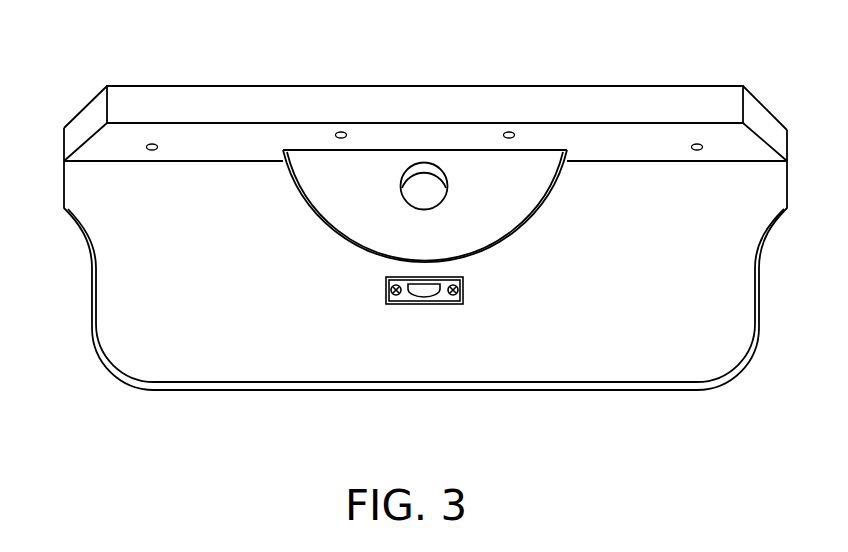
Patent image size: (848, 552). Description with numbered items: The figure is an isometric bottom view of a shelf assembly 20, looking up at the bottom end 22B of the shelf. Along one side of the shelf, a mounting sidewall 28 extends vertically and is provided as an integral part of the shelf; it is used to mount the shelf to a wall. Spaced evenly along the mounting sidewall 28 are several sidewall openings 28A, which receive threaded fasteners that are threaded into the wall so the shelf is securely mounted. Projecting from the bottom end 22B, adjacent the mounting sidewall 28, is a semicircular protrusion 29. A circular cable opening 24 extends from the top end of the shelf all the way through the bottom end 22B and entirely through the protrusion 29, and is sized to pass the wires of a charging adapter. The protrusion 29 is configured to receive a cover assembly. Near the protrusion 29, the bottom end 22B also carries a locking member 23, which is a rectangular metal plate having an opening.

The shelf assembly 20 is at (114, 335).
The bottom end 22B is at (259, 340).
The locking member 23 is at (436, 305).
The cable opening 24 is at (424, 190).
The mounting sidewall 28 is at (585, 145).
The sidewall openings 28A is at (342, 131).
The protrusion 29 is at (486, 193).